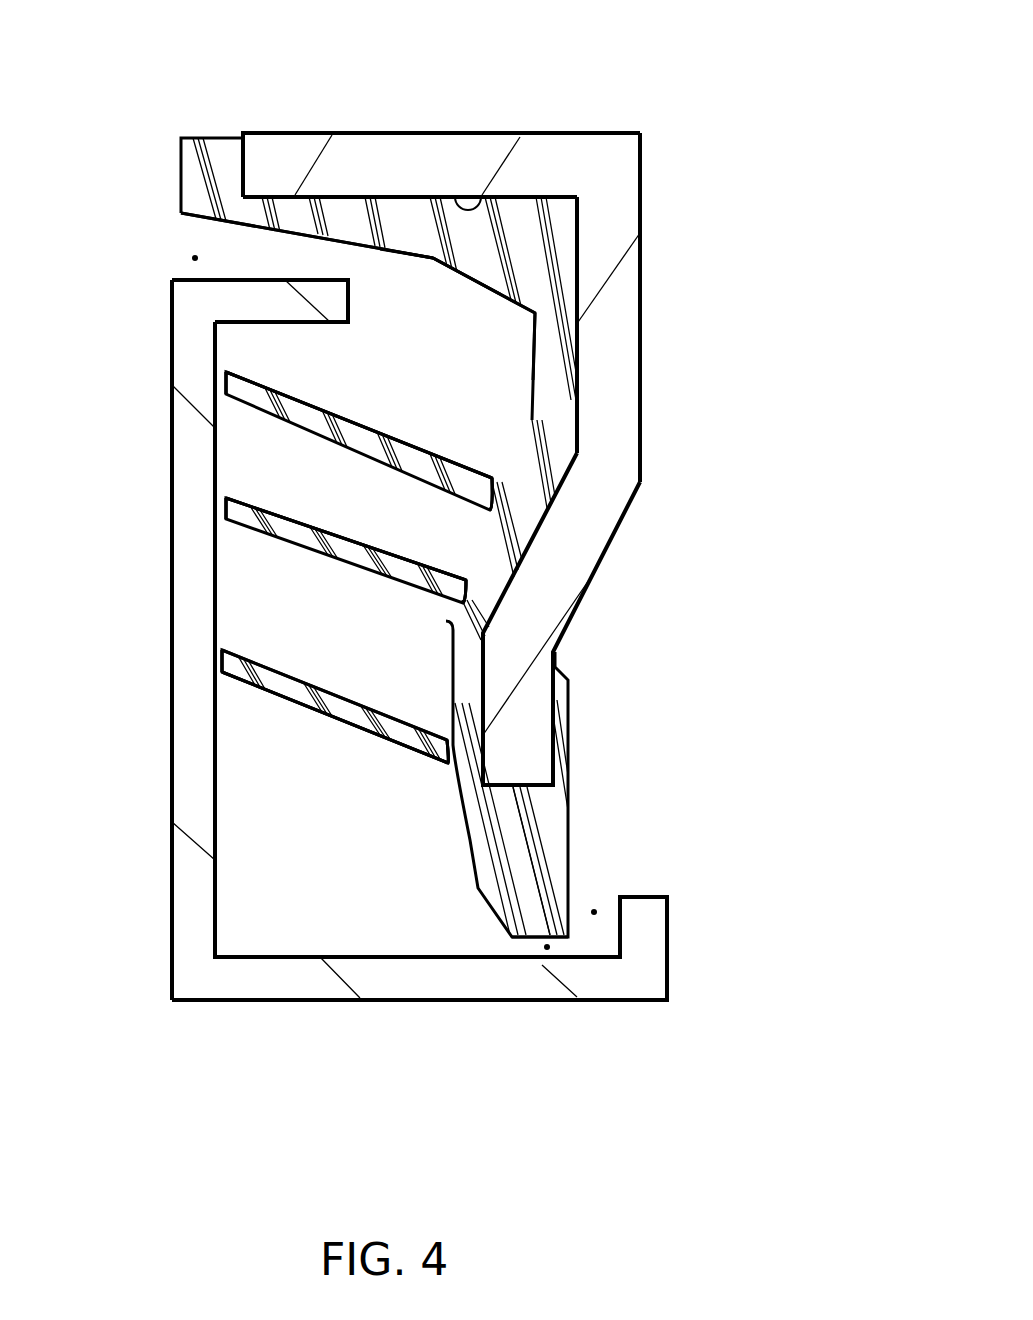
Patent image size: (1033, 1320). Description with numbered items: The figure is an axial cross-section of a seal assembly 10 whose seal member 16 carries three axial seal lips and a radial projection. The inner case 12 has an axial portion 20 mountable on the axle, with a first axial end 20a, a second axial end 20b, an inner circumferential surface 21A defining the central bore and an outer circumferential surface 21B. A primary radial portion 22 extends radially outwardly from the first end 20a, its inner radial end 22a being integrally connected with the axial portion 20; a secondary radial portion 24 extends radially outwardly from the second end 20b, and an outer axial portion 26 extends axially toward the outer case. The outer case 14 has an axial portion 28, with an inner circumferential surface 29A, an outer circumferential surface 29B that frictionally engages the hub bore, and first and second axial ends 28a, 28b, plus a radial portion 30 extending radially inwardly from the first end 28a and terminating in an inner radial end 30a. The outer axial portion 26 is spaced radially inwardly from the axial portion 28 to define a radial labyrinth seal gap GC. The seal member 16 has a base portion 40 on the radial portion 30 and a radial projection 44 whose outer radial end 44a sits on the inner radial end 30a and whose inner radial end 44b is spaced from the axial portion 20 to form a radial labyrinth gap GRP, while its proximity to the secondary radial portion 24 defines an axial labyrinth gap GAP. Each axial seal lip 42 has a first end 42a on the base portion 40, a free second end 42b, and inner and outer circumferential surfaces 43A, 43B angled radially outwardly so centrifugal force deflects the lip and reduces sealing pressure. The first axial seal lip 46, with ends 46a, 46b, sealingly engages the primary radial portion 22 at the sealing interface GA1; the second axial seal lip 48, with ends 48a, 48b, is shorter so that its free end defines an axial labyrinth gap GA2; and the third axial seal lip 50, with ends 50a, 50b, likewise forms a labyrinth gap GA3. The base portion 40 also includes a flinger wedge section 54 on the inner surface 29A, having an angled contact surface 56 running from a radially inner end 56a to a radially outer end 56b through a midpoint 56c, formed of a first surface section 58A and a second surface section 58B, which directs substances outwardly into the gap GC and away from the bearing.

The seal assembly 10 is at (795, 386).
The inner case 12 is at (110, 568).
The outer case 14 is at (697, 230).
The seal member 16 is at (585, 374).
The axial portion 20 is at (428, 1003).
The first axial end 20a is at (217, 980).
The second axial end 20b is at (617, 992).
The inner circumferential surface 21A is at (215, 862).
The outer circumferential surface 21B is at (170, 848).
The primary radial portion 22 is at (165, 766).
The inner radial end 22a is at (192, 937).
The secondary radial portion 24 is at (670, 932).
The outer axial portion 26 is at (303, 324).
The axial portion 28 is at (461, 130).
The first axial end 28a is at (578, 155).
The second axial end 28b is at (260, 142).
The inner circumferential surface 29A is at (480, 200).
The outer circumferential surface 29B is at (425, 128).
The radial portion 30 is at (630, 447).
The inner radial end 30a is at (532, 760).
The base portion 40 is at (527, 372).
The axial seal lip 42 is at (373, 427).
The first end 42a is at (488, 513).
The second end 42b is at (232, 396).
The inner circumferential surface 43A is at (328, 717).
The outer circumferential surface 43B is at (315, 406).
The radial projection 44 is at (472, 865).
The outer radial end 44a is at (537, 795).
The inner radial end 44b is at (525, 932).
The first axial seal lip 46 is at (313, 683).
The first end 46a is at (438, 742).
The second end 46b is at (222, 650).
The second axial seal lip 48 is at (366, 552).
The first end 48a is at (452, 597).
The second end 48b is at (232, 496).
The third axial seal lip 50 is at (403, 440).
The first end 50a is at (492, 480).
The second end 50b is at (231, 372).
The flinger wedge section 54 is at (420, 252).
The angled contact surface 56 is at (377, 250).
The radially inner end 56a is at (530, 317).
The radially outer end 56b is at (183, 213).
The midpoint 56c is at (465, 285).
The first surface section 58A is at (466, 278).
The second surface section 58B is at (323, 244).
The radial labyrinth seal gap GC is at (195, 258).
The first arm gap GA1 is at (219, 655).
The axial labyrinth seal gap GA2 is at (222, 507).
The labyrinth seal gap GA3 is at (224, 381).
The axial labyrinth seal gap GAP is at (596, 912).
The radial labyrinth seal gap GRP is at (547, 948).